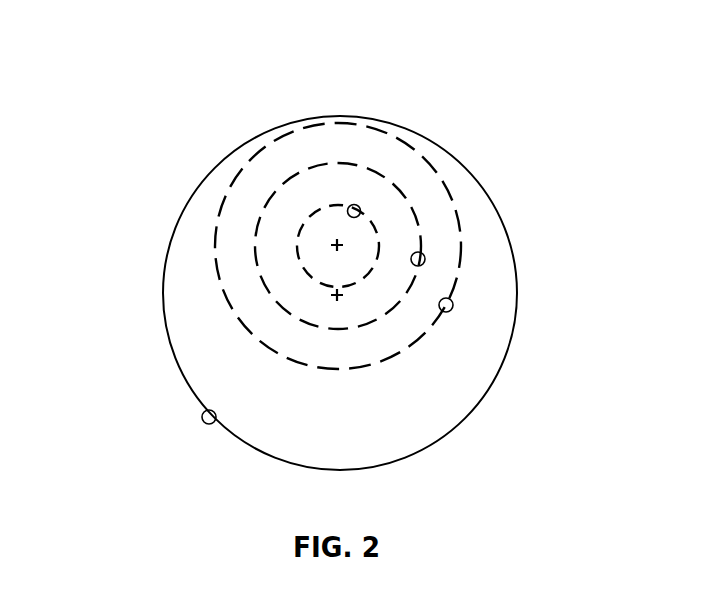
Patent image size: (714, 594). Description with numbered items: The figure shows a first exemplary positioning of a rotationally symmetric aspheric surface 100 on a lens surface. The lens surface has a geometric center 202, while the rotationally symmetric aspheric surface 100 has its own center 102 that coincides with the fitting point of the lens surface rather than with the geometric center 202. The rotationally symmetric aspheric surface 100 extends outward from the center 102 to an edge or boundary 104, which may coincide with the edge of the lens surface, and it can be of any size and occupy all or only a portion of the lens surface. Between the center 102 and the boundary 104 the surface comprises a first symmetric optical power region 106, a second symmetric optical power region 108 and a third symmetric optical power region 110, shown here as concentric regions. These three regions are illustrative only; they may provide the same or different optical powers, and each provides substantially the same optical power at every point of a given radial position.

The rotationally symmetric aspheric surface 100 is at (112, 83).
The center 102 is at (341, 241).
The boundary 104 is at (203, 421).
The first symmetric optical power region 106 is at (358, 206).
The second symmetric optical power region 108 is at (424, 256).
The third symmetric optical power region 110 is at (453, 304).
The geometric center 202 is at (343, 298).